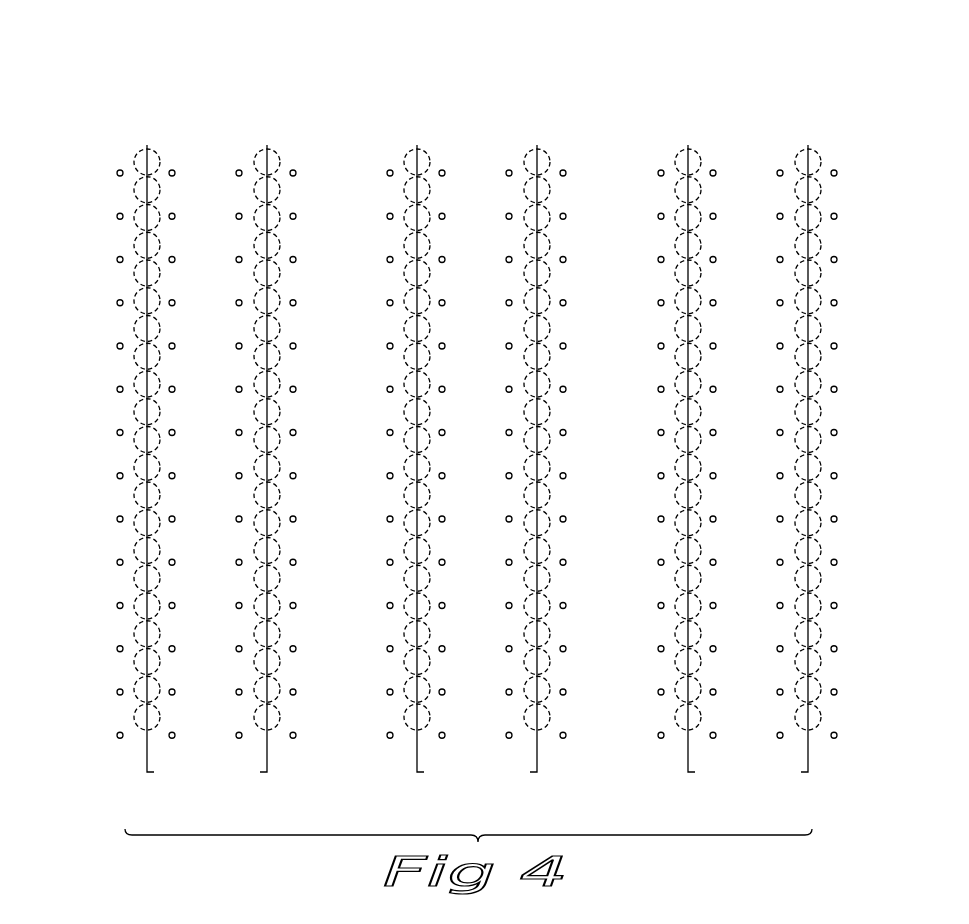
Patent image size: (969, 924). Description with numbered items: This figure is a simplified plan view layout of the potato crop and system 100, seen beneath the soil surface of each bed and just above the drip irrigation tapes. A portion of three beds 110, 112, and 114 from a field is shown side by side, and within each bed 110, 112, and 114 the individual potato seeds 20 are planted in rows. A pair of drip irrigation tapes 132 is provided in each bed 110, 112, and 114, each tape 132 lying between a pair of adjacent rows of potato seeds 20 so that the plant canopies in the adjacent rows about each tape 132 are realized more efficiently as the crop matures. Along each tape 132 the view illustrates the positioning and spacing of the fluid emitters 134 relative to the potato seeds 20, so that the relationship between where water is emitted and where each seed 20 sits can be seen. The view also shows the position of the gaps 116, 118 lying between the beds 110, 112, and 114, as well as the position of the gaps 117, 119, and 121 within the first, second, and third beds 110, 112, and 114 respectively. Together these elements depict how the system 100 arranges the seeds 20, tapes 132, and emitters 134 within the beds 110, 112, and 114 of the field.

The system 100 is at (160, 40).
The bed 110 is at (117, 110).
The bed 112 is at (387, 110).
The bed 114 is at (658, 110).
The gap 116 is at (338, 141).
The gap 118 is at (610, 141).
The gap 117 is at (207, 170).
The gap 119 is at (477, 170).
The gap 121 is at (748, 170).
The potato seed 20 is at (240, 255).
The fluid emitter 134 is at (255, 355).
The drip irrigation tape 132 is at (262, 774).